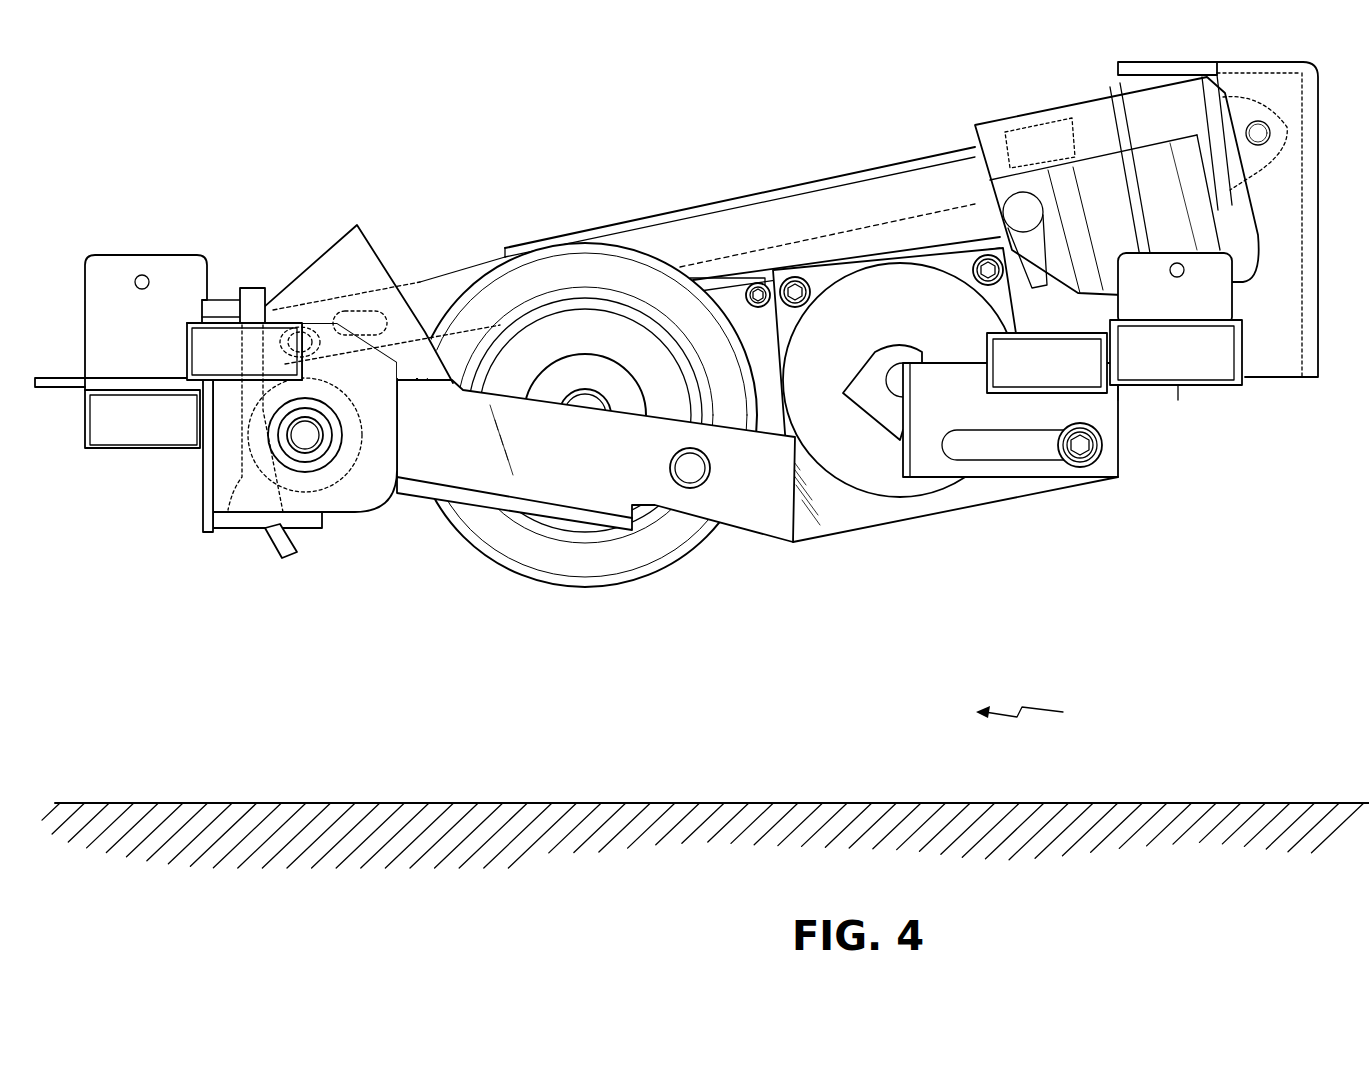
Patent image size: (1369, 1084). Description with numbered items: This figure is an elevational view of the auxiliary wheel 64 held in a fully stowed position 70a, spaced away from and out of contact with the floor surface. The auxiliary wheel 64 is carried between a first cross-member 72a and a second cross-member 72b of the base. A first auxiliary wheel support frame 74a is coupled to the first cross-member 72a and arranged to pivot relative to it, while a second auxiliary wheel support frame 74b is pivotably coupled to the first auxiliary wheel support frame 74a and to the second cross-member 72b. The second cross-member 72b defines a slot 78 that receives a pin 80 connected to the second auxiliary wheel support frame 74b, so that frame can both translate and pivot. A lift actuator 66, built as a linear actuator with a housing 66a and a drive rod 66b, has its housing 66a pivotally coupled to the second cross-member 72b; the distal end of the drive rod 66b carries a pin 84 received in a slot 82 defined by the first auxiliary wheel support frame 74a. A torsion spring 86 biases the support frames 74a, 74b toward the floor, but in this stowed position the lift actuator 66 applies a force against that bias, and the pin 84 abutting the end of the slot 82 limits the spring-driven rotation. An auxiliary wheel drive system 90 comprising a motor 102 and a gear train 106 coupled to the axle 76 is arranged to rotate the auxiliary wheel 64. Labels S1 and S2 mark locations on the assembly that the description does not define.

The auxiliary wheel 64 is at (585, 402).
The lift actuator 66 is at (642, 216).
The housing 66a is at (633, 235).
The drive rod 66b is at (420, 297).
The fully stowed position 70a is at (1041, 714).
The first cross-member 72a is at (85, 427).
The second cross-member 72b is at (1172, 390).
The first auxiliary wheel support frame 74a is at (478, 466).
The second auxiliary wheel support frame 74b is at (853, 505).
The axle 76 is at (553, 384).
The slot 78 is at (1007, 441).
The pin 80 is at (1088, 453).
The slot 82 is at (357, 312).
The pin 84 is at (280, 325).
The torsion spring 86 is at (228, 510).
The auxiliary wheel drive system 90 is at (720, 275).
The motor 102 is at (898, 283).
The gear train 106 is at (765, 282).
The first sensor S1 is at (297, 463).
The second sensor S2 is at (1030, 120).